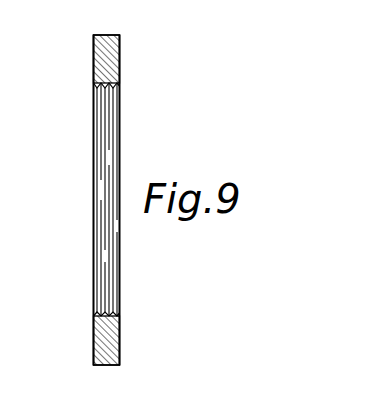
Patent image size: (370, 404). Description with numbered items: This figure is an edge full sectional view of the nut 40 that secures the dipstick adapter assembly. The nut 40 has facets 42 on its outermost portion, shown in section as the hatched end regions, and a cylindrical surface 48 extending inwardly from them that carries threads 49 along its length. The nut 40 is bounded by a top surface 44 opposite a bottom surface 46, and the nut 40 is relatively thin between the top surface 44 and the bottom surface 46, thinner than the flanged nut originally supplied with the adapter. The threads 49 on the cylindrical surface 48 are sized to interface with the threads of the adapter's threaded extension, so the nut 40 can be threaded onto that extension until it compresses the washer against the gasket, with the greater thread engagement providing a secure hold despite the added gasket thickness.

The nut 40 is at (133, 130).
The facets 42 is at (108, 35).
The top surface 44 is at (120, 57).
The bottom surface 46 is at (93, 58).
The cylindrical surface 48 is at (103, 86).
The threads 49 is at (93, 208).